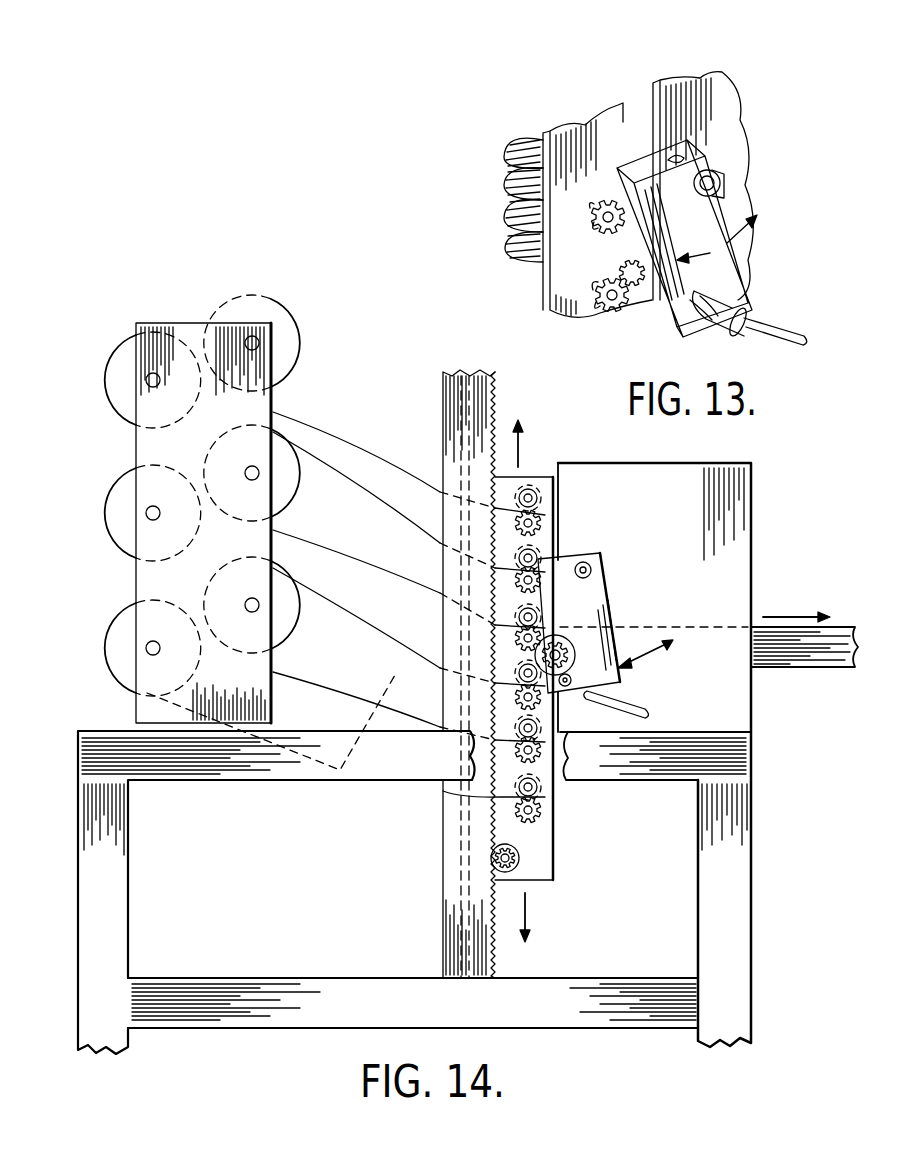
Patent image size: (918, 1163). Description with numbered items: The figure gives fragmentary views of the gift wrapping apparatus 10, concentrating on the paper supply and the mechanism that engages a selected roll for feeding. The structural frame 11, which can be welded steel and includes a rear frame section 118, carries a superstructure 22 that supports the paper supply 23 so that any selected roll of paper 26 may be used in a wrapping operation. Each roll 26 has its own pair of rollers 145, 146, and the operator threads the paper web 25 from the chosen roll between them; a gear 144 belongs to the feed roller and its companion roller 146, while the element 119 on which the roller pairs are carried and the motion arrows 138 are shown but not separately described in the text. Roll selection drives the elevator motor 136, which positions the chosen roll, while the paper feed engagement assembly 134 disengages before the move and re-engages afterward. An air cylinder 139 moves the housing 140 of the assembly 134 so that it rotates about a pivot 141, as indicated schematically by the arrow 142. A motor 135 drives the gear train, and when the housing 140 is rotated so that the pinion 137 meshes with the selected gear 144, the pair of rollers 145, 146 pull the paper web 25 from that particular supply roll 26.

In FIG. 14, the gift wrapping apparatus 10 is at (249, 174).
In FIG. 14, the structural frame 11 is at (115, 898).
In FIG. 14, the superstructure 22 is at (437, 378).
In FIG. 14, the paper supply 23 is at (163, 291).
In FIG. 14, the paper web 25 is at (337, 478).
In FIG. 14, the roll of paper 26 is at (275, 312).
In FIG. 14, the rear frame section 118 is at (602, 1010).
In FIG. 14, the strap guide strip 119 is at (546, 477).
In FIG. 13, the paper feed engagement assembly 134 is at (636, 75).
In FIG. 13, the motor 135 is at (712, 310).
In FIG. 14, the elevator motor 136 is at (563, 855).
In FIG. 14, the pinion 137 is at (530, 878).
In FIG. 14, the blade direction arrows 138 is at (497, 412).
In FIG. 13, the air cylinder 139 is at (773, 332).
In FIG. 14, the air cylinder 139 is at (640, 705).
In FIG. 14, the housing 140 is at (613, 608).
In FIG. 13, the pivot 141 is at (722, 178).
In FIG. 14, the pivot 141 is at (591, 563).
In FIG. 13, the arrow 142 is at (727, 243).
In FIG. 13, the gear 144 is at (607, 198).
In FIG. 14, the gear 144 is at (490, 835).
In FIG. 13, the roller 145 is at (512, 168).
In FIG. 14, the roller 145 is at (553, 821).
In FIG. 13, the companion roller 146 is at (530, 138).
In FIG. 14, the companion roller 146 is at (553, 795).